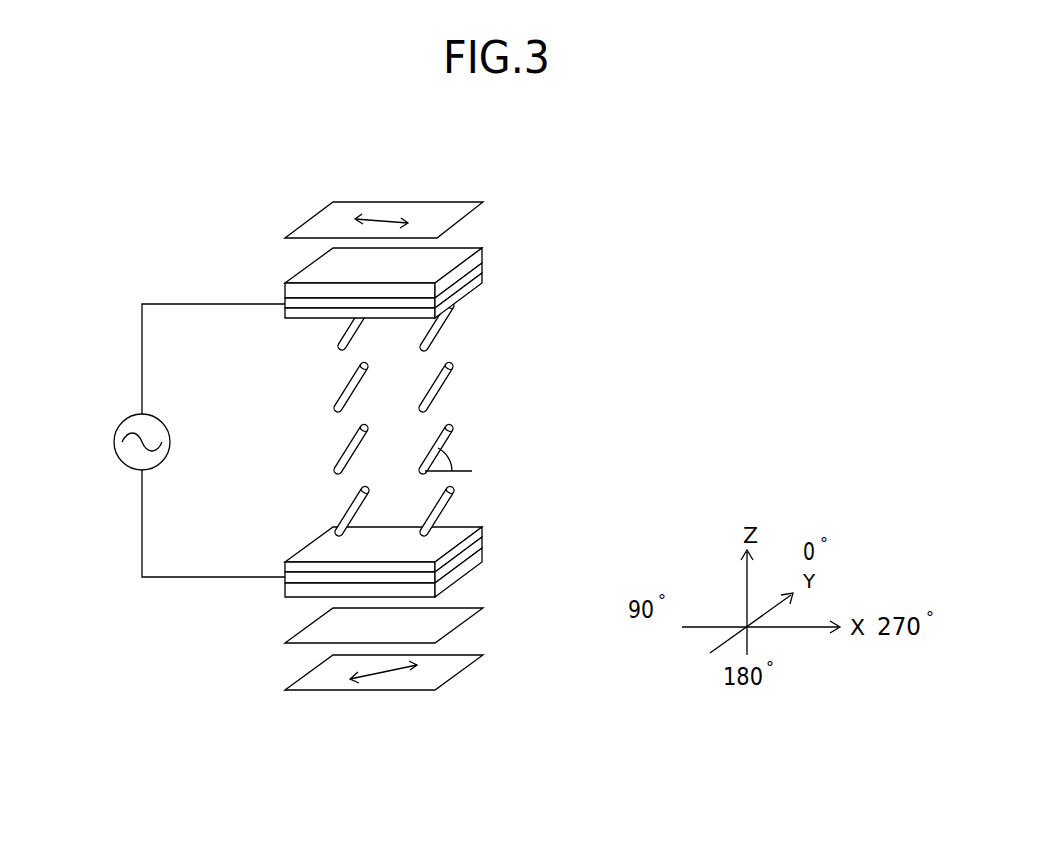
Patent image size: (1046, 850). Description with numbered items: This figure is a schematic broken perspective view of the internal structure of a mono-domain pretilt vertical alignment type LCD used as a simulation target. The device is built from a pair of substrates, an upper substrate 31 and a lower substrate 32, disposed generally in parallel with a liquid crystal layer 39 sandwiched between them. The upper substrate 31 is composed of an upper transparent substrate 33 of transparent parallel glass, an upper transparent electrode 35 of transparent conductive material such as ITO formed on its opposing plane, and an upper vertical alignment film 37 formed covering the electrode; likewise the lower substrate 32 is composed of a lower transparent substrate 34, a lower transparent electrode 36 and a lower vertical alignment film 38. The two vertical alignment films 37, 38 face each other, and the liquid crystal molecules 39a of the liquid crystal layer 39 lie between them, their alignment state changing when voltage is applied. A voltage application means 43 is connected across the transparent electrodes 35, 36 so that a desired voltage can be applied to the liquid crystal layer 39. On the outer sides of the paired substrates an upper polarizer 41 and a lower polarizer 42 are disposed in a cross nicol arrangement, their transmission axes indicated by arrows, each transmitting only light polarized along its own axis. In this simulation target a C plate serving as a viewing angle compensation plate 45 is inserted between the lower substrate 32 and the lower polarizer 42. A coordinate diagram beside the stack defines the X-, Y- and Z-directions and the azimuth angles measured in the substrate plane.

The upper substrate 31 is at (454, 270).
The lower substrate 32 is at (454, 555).
The upper transparent substrate 33 is at (483, 253).
The lower transparent substrate 34 is at (422, 574).
The upper transparent electrode 35 is at (483, 270).
The lower transparent electrode 36 is at (483, 542).
The upper vertical alignment film 37 is at (422, 295).
The lower vertical alignment film 38 is at (483, 530).
The liquid crystal layer 39 is at (396, 418).
The liquid crystal molecule 39a is at (310, 331).
The upper polarizer 41 is at (468, 214).
The lower polarizer 42 is at (470, 663).
The voltage application means 43 is at (113, 443).
The viewing angle compensation plate 45 is at (470, 617).